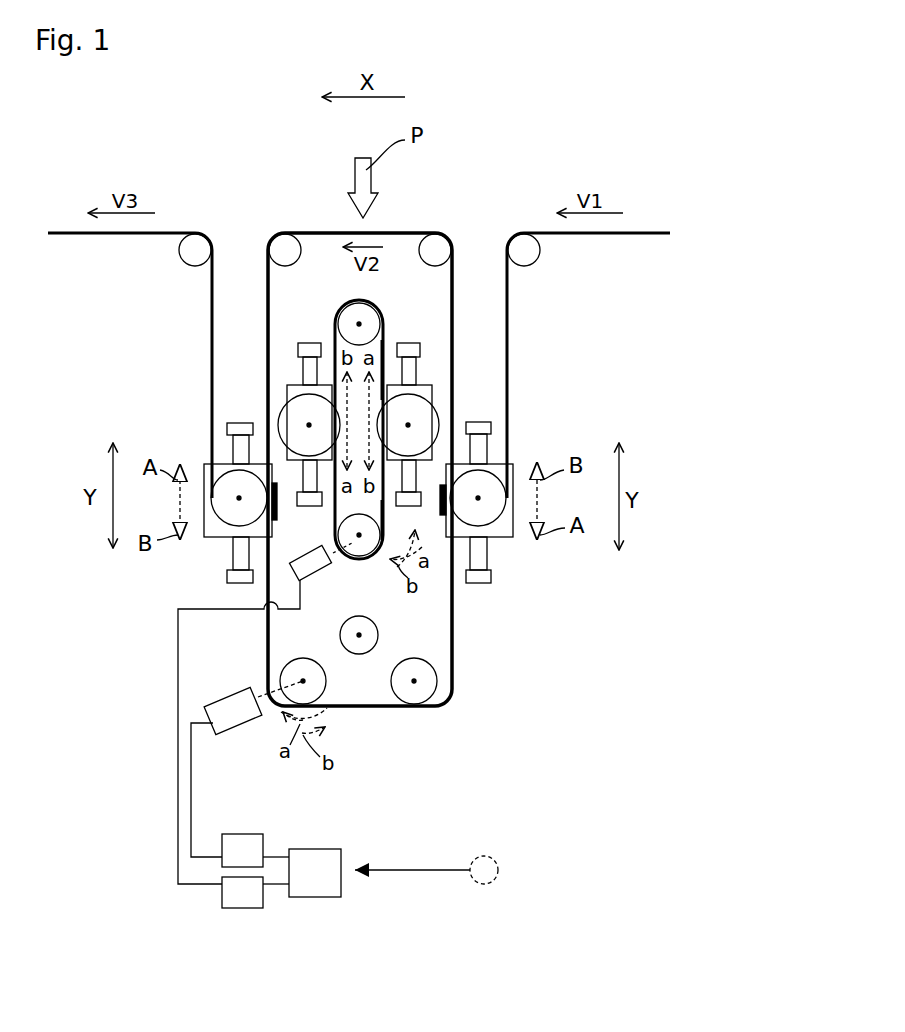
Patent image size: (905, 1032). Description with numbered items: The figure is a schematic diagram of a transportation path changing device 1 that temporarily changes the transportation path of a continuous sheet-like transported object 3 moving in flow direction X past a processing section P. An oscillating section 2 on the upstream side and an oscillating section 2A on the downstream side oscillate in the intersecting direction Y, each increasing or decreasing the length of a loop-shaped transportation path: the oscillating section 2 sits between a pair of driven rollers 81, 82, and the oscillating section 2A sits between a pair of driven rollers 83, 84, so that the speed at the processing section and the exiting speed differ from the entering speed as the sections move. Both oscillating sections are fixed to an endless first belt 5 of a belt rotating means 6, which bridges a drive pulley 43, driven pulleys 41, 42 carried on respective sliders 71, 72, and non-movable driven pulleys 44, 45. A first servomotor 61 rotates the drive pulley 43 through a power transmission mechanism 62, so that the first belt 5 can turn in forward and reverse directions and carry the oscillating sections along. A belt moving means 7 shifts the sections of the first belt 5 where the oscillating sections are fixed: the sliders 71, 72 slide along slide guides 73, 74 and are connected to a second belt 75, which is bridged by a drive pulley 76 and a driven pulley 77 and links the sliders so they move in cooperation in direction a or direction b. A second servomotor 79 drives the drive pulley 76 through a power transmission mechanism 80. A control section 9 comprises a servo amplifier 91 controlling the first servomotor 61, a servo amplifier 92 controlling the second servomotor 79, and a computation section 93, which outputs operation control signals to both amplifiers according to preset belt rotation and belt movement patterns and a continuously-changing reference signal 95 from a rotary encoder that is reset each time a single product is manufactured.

The transportation path changing device 1 is at (510, 162).
The oscillating section 2 is at (523, 488).
The oscillating section 2A is at (196, 495).
The transported object 3 is at (413, 232).
The first belt 5 is at (455, 590).
The belt rotating means 6 is at (397, 489).
The belt moving means 7 is at (341, 302).
The control section 9 is at (294, 894).
The driven pulley 41 is at (468, 409).
The driven pulley 42 is at (239, 393).
The drive pulley 43 is at (318, 677).
The non-movable driven pulley 44 is at (360, 648).
The non-movable driven pulley 45 is at (424, 686).
The first servomotor 61 is at (232, 722).
The power transmission mechanism 62 is at (262, 686).
The slider 71 is at (430, 398).
The slider 72 is at (290, 400).
The slide guide 73 is at (412, 365).
The slide guide 74 is at (305, 365).
The second belt 75 is at (385, 360).
The drive pulley 76 is at (374, 562).
The driven pulley 77 is at (363, 312).
The second servomotor 79 is at (288, 547).
The power transmission mechanism 80 is at (355, 560).
The driven roller 81 is at (524, 250).
The driven roller 82 is at (440, 245).
The driven roller 83 is at (283, 250).
The driven roller 84 is at (192, 255).
The servo amplifier 91 is at (250, 832).
The servo amplifier 92 is at (255, 908).
The computation section 93 is at (315, 848).
The reference signal 95 is at (430, 871).